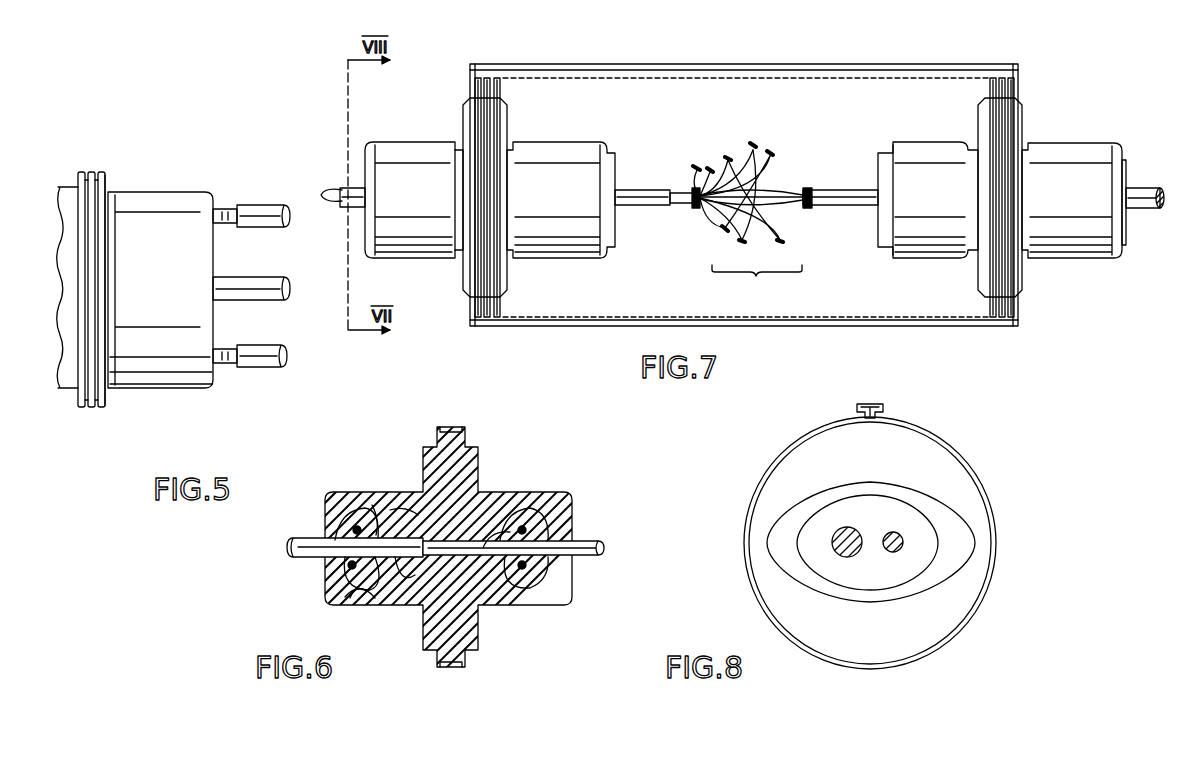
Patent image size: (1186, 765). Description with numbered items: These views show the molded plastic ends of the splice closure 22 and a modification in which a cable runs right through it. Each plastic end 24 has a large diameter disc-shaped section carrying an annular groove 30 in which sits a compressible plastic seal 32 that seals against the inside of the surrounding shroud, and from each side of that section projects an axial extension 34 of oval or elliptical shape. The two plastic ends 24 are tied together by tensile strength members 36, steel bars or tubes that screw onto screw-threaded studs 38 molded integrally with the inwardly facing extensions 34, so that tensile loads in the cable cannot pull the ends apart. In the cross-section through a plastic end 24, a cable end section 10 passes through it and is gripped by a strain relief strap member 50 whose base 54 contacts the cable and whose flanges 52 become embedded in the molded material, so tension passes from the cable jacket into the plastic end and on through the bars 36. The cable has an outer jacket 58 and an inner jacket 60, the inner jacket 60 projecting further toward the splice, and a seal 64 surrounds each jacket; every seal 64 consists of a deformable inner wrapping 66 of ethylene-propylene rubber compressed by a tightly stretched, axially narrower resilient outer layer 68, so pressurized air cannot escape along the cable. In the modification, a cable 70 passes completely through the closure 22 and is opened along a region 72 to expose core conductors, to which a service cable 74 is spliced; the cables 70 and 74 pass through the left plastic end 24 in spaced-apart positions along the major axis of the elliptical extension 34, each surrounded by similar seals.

In FIG. 5, the cable end section 10 is at (270, 284).
In FIG. 6, the cable end section 10 is at (300, 543).
In FIG. 7, the closure 22 is at (777, 64).
In FIG. 8, the closure 22 is at (980, 462).
In FIG. 5, the plastic end 24 is at (166, 190).
In FIG. 7, the plastic end 24 is at (557, 142).
In FIG. 6, the plastic end 24 is at (493, 490).
In FIG. 8, the plastic end 24 is at (783, 475).
In FIG. 5, the annular groove 30 is at (96, 407).
In FIG. 5, the compressible plastic seal 32 is at (90, 410).
In FIG. 5, the axial extension 34 is at (167, 388).
In FIG. 8, the axial extension 34 is at (977, 540).
In FIG. 5, the tensile strength member 36 is at (278, 205).
In FIG. 5, the screw-threaded stud 38 is at (225, 208).
In FIG. 6, the strap member 50 is at (375, 520).
In FIG. 6, the flange 52 is at (340, 597).
In FIG. 6, the base 54 is at (353, 600).
In FIG. 6, the outer jacket 58 is at (417, 510).
In FIG. 6, the inner jacket 60 is at (483, 548).
In FIG. 6, the seal 64 is at (330, 580).
In FIG. 6, the inner wrapping 66 is at (340, 497).
In FIG. 6, the outer layer 68 is at (357, 500).
In FIG. 7, the cable 70 is at (343, 207).
In FIG. 8, the cable 70 is at (835, 548).
In FIG. 7, the region 72 is at (748, 226).
In FIG. 7, the service cable 74 is at (340, 190).
In FIG. 8, the service cable 74 is at (900, 542).